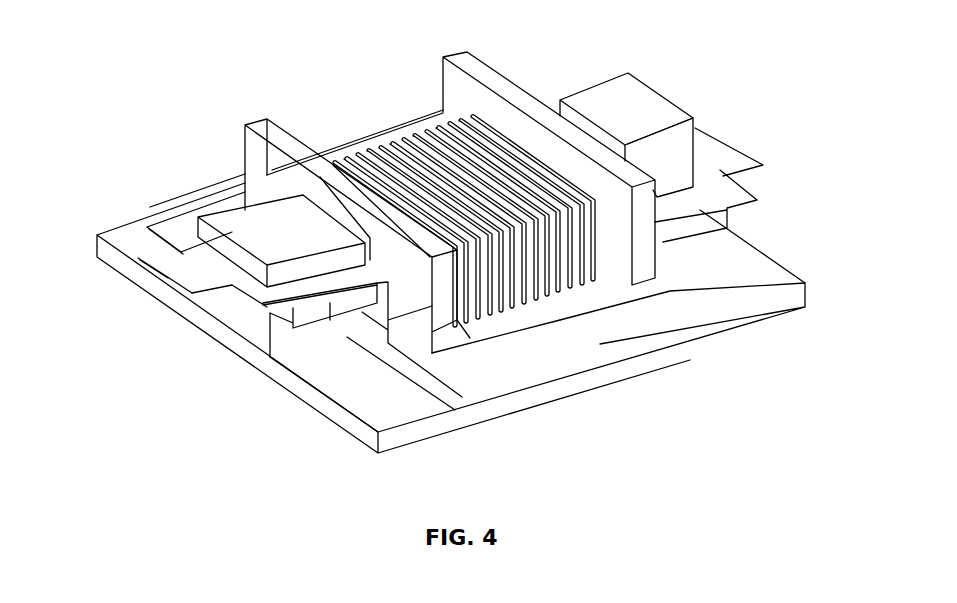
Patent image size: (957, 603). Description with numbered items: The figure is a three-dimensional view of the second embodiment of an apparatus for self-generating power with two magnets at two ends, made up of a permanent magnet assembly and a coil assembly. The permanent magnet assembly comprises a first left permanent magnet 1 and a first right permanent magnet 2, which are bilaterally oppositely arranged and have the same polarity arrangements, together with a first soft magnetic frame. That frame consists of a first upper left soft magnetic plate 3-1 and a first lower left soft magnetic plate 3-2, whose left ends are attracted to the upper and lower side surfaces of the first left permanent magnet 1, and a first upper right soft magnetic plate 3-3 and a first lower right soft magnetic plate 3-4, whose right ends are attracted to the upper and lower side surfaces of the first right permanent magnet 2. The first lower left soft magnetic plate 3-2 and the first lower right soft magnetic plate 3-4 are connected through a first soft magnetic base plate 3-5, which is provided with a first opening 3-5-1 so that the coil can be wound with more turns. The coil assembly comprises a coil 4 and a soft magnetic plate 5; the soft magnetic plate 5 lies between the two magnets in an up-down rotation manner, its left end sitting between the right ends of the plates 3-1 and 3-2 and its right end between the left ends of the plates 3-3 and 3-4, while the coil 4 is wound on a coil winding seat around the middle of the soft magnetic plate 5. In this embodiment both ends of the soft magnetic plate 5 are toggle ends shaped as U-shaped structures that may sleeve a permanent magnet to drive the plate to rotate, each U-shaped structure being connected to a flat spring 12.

The first left permanent magnet 1 is at (283, 328).
The first right permanent magnet 2 is at (670, 177).
The first upper left soft magnetic plate 3-1 is at (273, 232).
The first lower left soft magnetic plate 3-2 is at (385, 392).
The first upper right soft magnetic plate 3-3 is at (605, 110).
The first lower right soft magnetic plate 3-4 is at (745, 270).
The first soft magnetic base plate 3-5 is at (603, 330).
The first opening 3-5-1 is at (503, 330).
The coil 4 is at (330, 320).
The soft magnetic plate 5 is at (380, 135).
The flat spring 12 is at (197, 262).